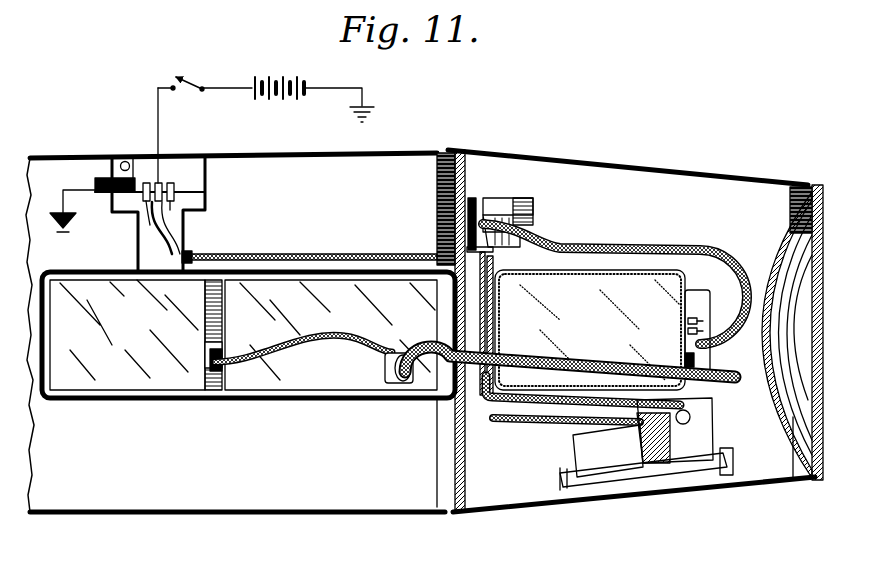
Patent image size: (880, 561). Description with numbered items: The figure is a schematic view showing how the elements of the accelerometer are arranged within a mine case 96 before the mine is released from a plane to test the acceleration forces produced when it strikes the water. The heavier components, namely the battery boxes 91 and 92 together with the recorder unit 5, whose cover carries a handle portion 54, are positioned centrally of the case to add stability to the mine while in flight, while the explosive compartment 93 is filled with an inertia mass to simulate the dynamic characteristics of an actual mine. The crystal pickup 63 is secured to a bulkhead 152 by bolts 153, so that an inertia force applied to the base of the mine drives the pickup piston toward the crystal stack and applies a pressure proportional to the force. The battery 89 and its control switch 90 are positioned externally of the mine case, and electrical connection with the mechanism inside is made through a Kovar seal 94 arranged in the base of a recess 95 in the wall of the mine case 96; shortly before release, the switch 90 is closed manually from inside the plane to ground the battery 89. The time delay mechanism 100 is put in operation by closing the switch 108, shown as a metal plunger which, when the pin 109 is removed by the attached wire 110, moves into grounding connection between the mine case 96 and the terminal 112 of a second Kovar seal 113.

The recording unit 5 is at (590, 266).
The handle portion 54 is at (698, 294).
The crystal pickup 63 is at (522, 195).
The battery 89 is at (302, 77).
The control switch 90 is at (188, 78).
The battery box 91 is at (128, 346).
The battery box 92 is at (344, 321).
The explosive compartment 93 is at (347, 504).
The Kovar seal 94 is at (170, 182).
The recess 95 is at (205, 186).
The mine case 96 is at (393, 153).
The time delay mechanism 100 is at (720, 430).
The switch 108 is at (146, 182).
The pin 109 is at (118, 166).
The wire 110 is at (124, 160).
The terminal 112 is at (159, 180).
The second Kovar seal 113 is at (142, 206).
The bulkhead 152 is at (467, 455).
The bolts 153 is at (497, 198).